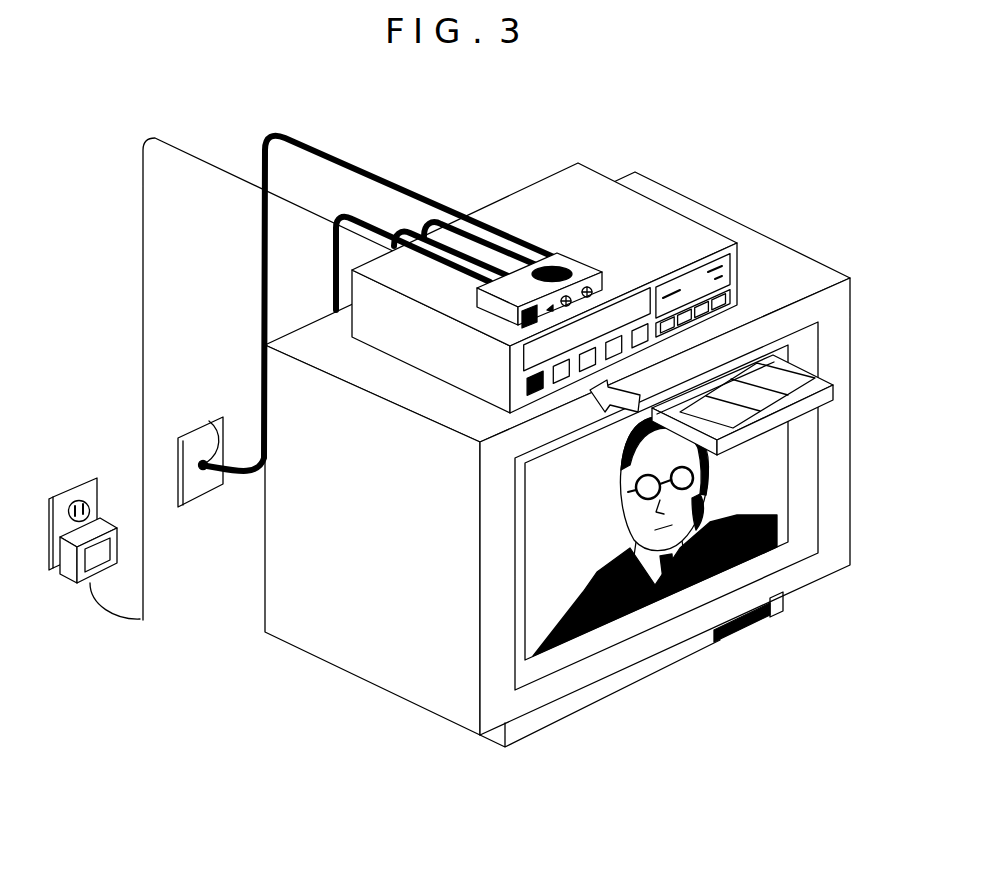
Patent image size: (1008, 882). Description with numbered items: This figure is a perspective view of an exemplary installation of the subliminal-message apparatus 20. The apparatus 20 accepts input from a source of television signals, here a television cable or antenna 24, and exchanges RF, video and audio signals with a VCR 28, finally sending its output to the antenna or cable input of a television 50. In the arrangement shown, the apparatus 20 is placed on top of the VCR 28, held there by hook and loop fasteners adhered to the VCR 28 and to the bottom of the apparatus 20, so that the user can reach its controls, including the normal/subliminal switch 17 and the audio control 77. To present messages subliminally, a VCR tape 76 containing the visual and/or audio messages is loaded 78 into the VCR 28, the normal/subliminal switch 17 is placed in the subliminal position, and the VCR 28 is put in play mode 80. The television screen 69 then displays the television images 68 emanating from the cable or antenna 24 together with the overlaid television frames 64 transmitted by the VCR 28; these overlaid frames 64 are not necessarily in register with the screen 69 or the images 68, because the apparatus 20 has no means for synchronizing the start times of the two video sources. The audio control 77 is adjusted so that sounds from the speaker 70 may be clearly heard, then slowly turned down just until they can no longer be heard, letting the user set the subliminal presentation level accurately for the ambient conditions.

The normal/subliminal switch 17 is at (522, 326).
The apparatus 20 is at (588, 260).
The television cable or antenna 24 is at (220, 425).
The VCR 28 is at (581, 180).
The television 50 is at (678, 203).
The television frames transmitted by the VCR 64 is at (537, 634).
The television images 68 is at (662, 600).
The television screen 69 is at (780, 486).
The speaker 70 is at (549, 266).
The VCR tape 76 is at (823, 378).
The audio control 77 is at (782, 619).
The loading of the tape 78 is at (601, 406).
The play mode 80 is at (515, 346).